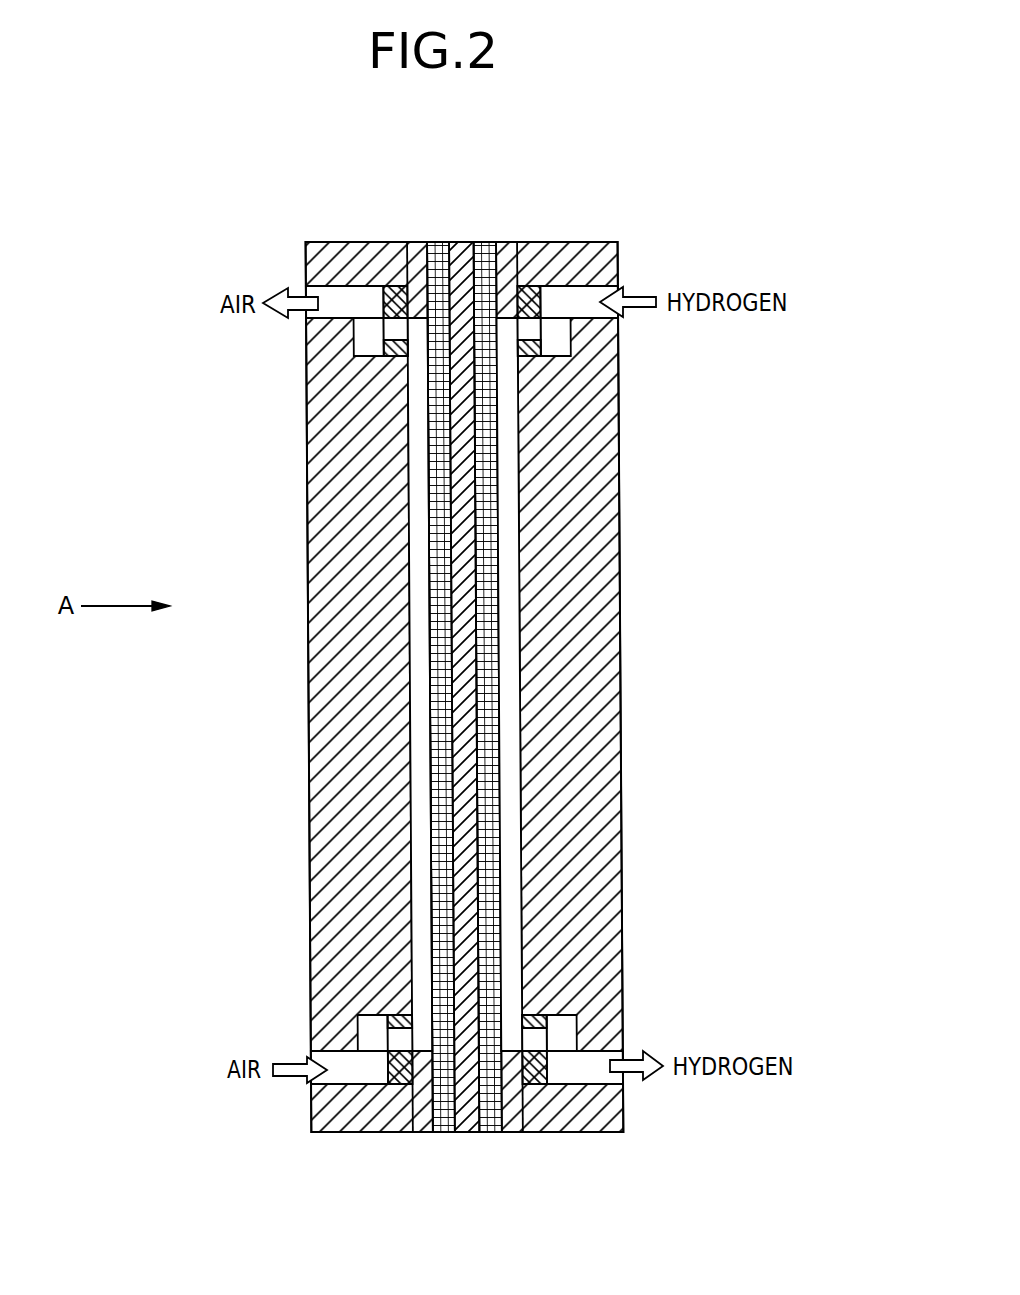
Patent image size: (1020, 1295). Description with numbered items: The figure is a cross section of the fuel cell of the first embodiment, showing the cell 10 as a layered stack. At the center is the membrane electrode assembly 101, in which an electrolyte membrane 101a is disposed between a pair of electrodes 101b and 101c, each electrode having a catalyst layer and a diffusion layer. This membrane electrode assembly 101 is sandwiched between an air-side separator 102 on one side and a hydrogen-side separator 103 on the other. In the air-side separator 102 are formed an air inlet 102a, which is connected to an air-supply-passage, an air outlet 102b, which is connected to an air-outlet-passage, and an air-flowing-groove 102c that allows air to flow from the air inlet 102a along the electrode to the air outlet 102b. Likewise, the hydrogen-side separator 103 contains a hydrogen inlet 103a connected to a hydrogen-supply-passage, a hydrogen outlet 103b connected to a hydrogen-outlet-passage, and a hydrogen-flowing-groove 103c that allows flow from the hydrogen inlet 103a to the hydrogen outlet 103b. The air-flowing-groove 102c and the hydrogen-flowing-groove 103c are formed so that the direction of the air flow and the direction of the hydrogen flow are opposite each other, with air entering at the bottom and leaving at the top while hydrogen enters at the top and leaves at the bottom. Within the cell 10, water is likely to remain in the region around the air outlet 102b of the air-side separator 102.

The cell 10 is at (710, 391).
The membrane electrode assembly 101 is at (462, 617).
The electrolyte membrane 101a is at (459, 252).
The electrode 101b is at (438, 244).
The electrode 101c is at (530, 638).
The air-side separator 102 is at (300, 571).
The air inlet 102a is at (358, 1068).
The air outlet 102b is at (350, 298).
The air-flowing-groove 102c is at (415, 487).
The hydrogen-side separator 103 is at (630, 572).
The hydrogen inlet 103a is at (562, 300).
The hydrogen outlet 103b is at (575, 1070).
The hydrogen-flowing-groove 103c is at (510, 484).